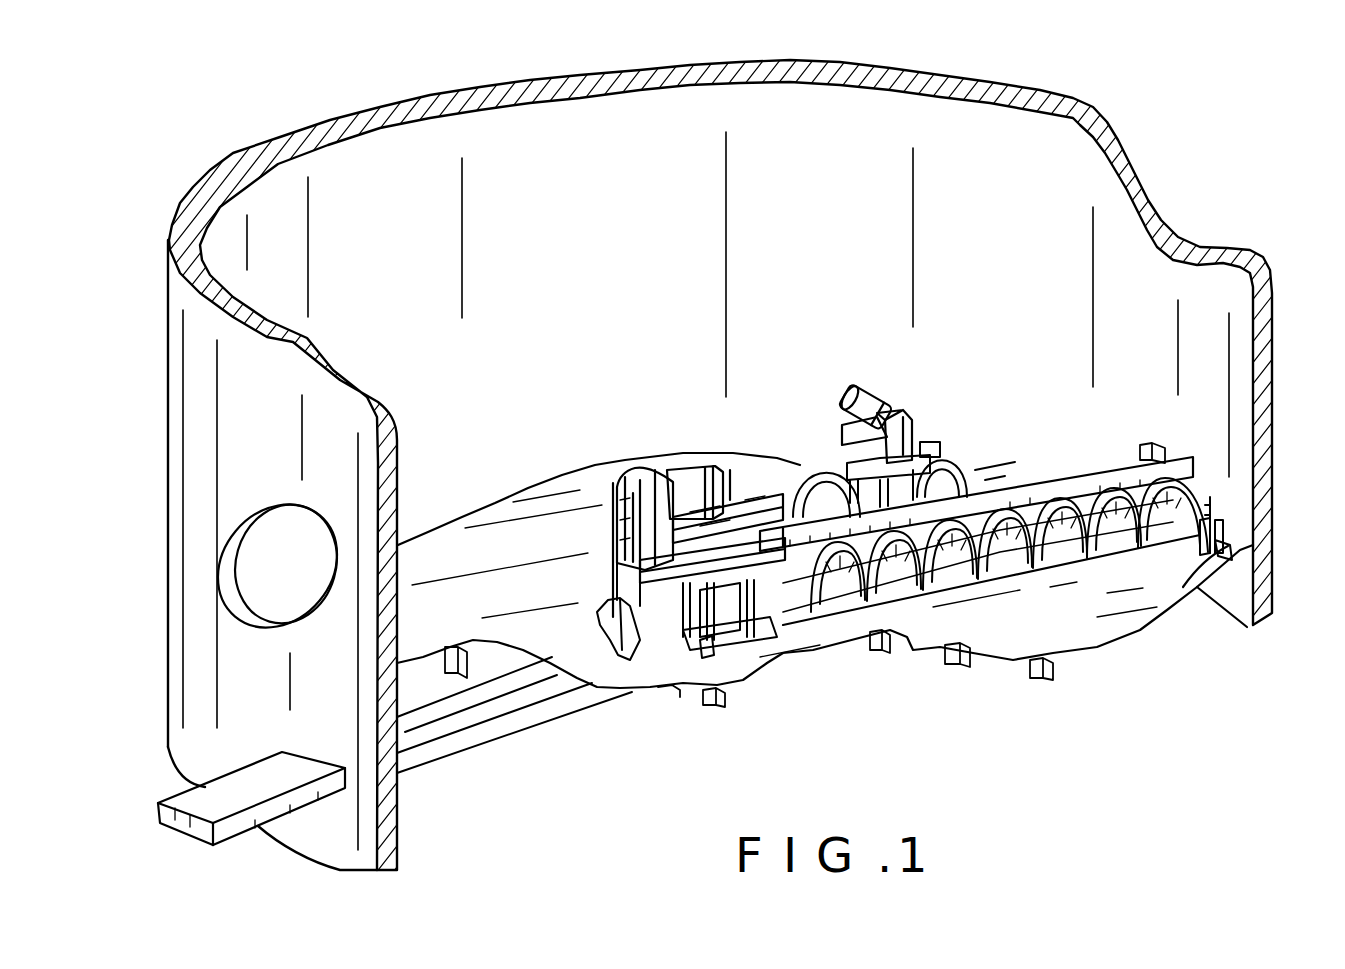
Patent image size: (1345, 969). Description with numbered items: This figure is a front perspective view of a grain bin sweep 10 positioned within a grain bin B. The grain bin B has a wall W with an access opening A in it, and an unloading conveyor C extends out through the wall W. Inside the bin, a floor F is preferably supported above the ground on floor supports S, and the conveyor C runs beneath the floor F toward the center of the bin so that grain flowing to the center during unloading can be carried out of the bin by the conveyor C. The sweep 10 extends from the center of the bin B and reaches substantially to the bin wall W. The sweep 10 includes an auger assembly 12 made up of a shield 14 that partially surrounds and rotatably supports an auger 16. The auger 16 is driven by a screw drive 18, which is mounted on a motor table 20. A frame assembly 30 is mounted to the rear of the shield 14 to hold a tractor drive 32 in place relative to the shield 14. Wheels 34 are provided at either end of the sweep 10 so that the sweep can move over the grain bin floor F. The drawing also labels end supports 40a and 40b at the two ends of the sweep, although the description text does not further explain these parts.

The grain bin sweep 10 is at (952, 413).
The auger assembly 12 is at (1063, 474).
The shield 14 is at (1185, 456).
The auger 16 is at (1000, 580).
The screw drive 18 is at (686, 476).
The motor table 20 is at (695, 590).
The frame assembly 30 is at (996, 466).
The tractor drive 32 is at (872, 402).
The wheels 34 is at (618, 620).
The end support 40a is at (1200, 537).
The end support 40b is at (700, 655).
The wall W is at (168, 330).
The grain bin B is at (166, 406).
The access opening A is at (228, 578).
The unloading conveyor C is at (160, 818).
The floor supports S is at (883, 640).
The floor F is at (942, 633).